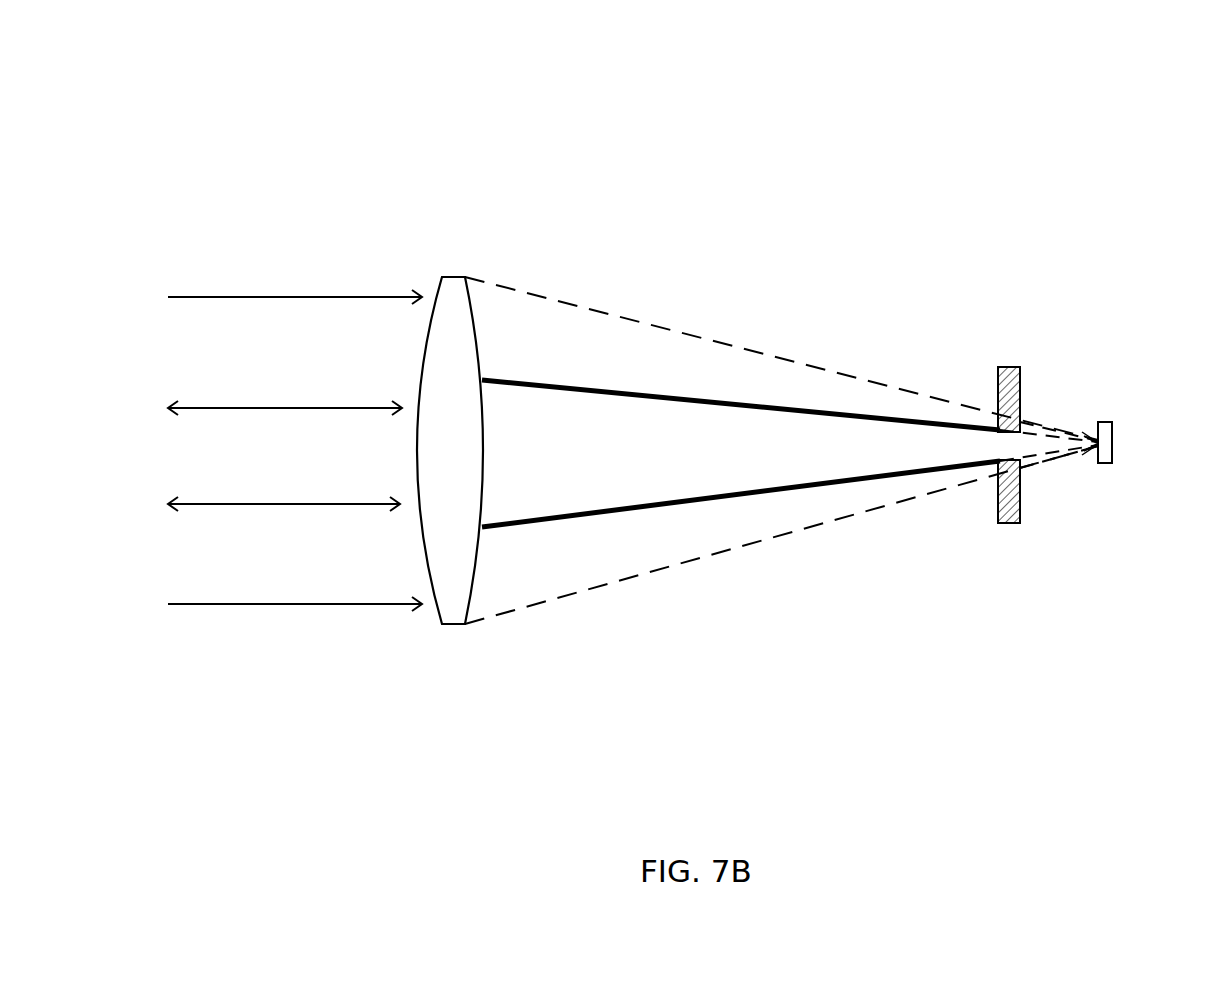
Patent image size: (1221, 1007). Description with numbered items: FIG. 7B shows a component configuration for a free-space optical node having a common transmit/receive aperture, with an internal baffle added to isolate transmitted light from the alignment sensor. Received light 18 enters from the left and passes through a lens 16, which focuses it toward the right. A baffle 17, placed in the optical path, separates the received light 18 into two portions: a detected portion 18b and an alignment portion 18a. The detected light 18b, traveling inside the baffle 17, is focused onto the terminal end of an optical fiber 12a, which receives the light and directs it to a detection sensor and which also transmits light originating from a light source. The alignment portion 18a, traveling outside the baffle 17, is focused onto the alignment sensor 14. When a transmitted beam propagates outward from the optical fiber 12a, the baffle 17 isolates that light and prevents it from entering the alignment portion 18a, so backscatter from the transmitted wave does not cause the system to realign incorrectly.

The received light 18 is at (208, 297).
The lens 16 is at (453, 310).
The alignment portion 18a is at (603, 367).
The detected portion 18b is at (730, 447).
The baffle 17 is at (667, 505).
The alignment sensor 14 is at (1004, 367).
The optical fiber 12a is at (1112, 427).